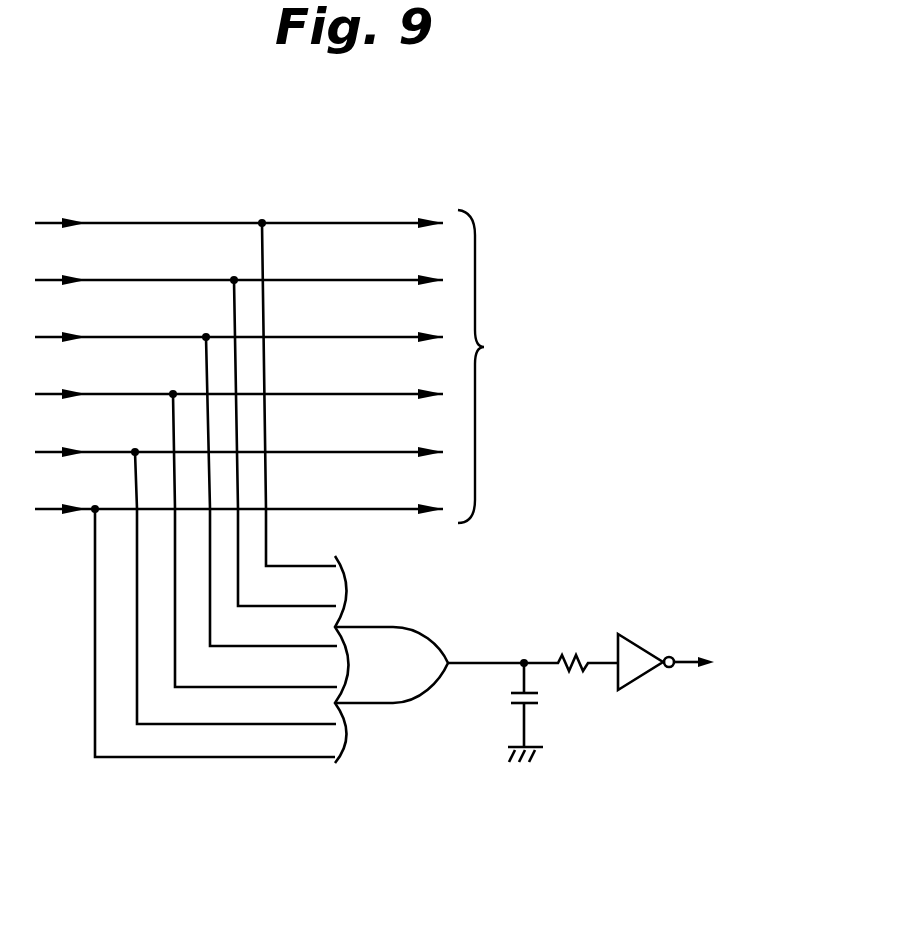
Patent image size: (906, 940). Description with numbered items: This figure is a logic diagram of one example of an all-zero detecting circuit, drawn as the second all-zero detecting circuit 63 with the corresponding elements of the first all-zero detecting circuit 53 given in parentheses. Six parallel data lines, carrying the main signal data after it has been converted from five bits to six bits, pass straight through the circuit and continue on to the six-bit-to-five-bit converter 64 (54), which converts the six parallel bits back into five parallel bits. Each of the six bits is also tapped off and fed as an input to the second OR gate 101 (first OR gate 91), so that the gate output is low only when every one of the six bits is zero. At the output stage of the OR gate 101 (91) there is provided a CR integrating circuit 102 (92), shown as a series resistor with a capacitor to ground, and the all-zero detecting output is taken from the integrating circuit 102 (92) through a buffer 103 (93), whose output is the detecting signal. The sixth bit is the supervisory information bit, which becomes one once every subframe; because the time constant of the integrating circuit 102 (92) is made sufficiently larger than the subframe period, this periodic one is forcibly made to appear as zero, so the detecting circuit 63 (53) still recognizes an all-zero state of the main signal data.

The second all "0" detecting circuit 63 is at (578, 645).
The first all "0" detecting circuit 53 is at (578, 645).
The 6B/5B converter 64 is at (526, 366).
The 6B/5B converter 54 is at (526, 366).
The second OR gate 101 is at (437, 659).
The first OR gate 91 is at (402, 627).
The CR integrating circuit 102 is at (604, 712).
The CR integrating circuit 92 is at (560, 690).
The buffer 103 is at (688, 634).
The buffer 93 is at (637, 644).